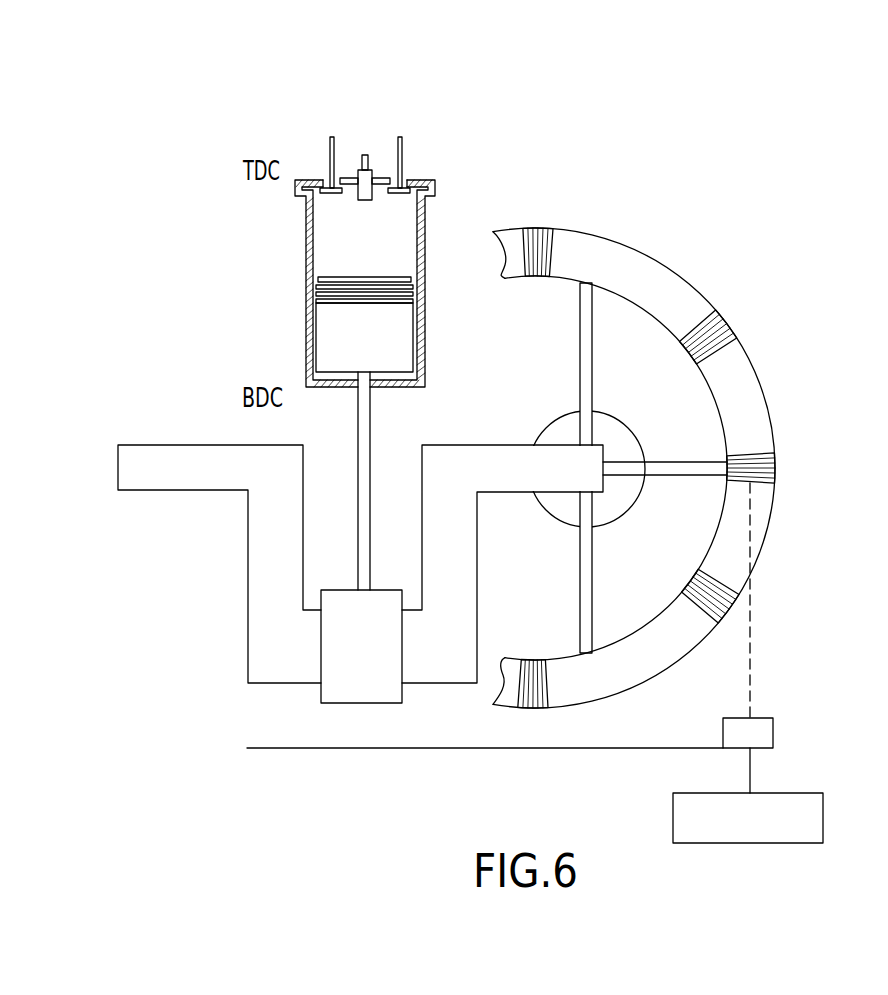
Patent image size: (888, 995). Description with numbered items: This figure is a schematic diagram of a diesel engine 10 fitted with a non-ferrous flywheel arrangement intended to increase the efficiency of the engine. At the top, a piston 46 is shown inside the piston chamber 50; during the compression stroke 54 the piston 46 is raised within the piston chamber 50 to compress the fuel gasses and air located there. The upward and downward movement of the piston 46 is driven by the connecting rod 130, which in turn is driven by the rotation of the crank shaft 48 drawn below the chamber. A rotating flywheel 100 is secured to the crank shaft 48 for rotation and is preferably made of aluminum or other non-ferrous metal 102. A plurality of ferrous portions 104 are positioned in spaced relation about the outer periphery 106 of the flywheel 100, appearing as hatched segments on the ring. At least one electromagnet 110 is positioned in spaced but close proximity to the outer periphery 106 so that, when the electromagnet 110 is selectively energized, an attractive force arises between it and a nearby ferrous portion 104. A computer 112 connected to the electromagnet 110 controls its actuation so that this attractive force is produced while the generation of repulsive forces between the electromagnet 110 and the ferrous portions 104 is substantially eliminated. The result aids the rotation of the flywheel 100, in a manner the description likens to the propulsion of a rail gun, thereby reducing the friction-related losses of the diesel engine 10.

The diesel engine 10 is at (256, 233).
The compression stroke 54 is at (272, 288).
The piston chamber 50 is at (398, 246).
The piston 46 is at (400, 347).
The connecting rod 130 is at (372, 422).
The crank shaft 48 is at (248, 583).
The flywheel 100 is at (765, 390).
The non-ferrous metal 102 is at (688, 298).
The outer periphery 106 is at (613, 237).
The ferrous portion 104 is at (533, 232).
The electromagnet 110 is at (775, 730).
The computer 112 is at (673, 815).